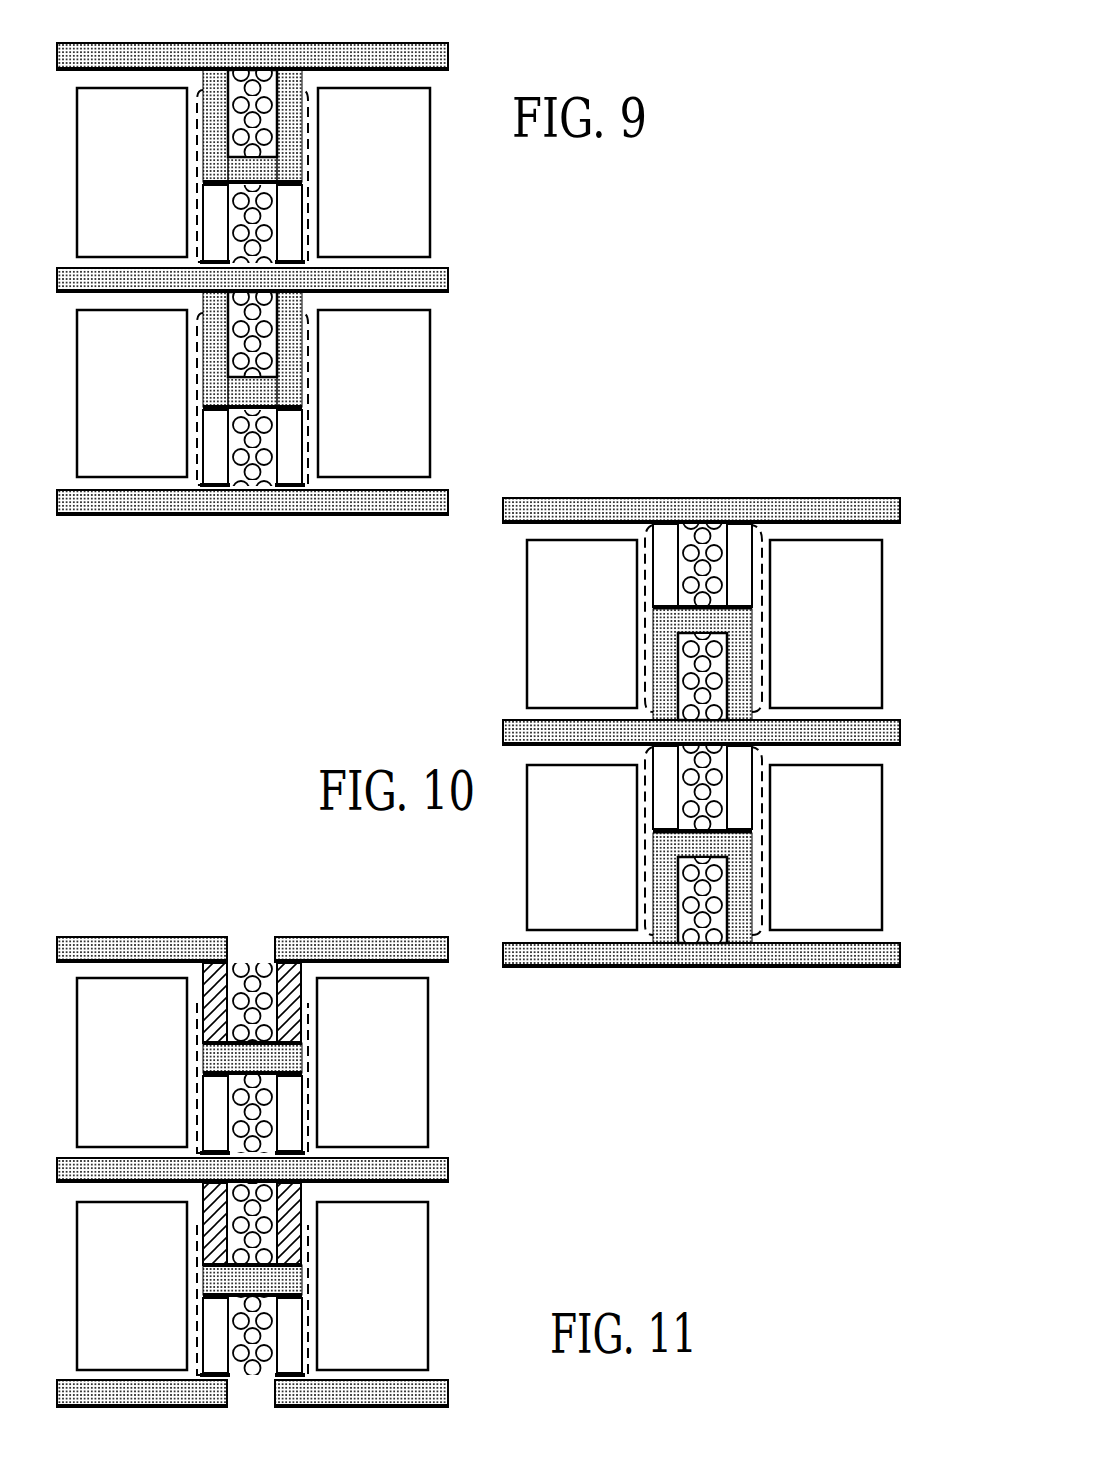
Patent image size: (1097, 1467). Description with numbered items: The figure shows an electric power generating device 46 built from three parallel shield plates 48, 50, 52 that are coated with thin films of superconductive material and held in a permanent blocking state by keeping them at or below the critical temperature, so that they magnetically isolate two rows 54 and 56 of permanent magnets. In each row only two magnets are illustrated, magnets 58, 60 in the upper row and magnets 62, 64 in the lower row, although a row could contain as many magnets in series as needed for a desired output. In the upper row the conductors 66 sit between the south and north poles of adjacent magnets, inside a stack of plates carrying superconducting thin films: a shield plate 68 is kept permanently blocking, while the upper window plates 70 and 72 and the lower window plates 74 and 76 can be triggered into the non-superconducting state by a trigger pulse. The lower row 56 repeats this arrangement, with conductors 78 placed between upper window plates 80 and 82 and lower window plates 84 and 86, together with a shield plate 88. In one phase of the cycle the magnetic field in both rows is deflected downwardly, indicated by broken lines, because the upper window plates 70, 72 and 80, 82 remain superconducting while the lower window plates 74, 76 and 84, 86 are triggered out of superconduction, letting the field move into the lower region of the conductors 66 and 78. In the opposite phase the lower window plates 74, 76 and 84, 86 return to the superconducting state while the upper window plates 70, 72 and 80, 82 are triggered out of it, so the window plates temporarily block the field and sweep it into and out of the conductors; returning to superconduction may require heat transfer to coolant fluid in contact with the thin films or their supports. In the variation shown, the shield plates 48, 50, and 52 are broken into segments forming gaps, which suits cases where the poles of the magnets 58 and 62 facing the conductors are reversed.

In FIG. 9, the electric power generating device 46 is at (165, 537).
In FIG. 10, the electric power generating device 46 is at (680, 468).
In FIG. 11, the electric power generating device 46 is at (225, 907).
In FIG. 9, the shield plate 48 is at (375, 43).
In FIG. 11, the shield plate 48 is at (372, 937).
In FIG. 9, the shield plate 50 is at (425, 268).
In FIG. 9, the shield plate 52 is at (360, 516).
In FIG. 11, the shield plate 52 is at (425, 1381).
In FIG. 9, the row of permanent magnets 54 is at (446, 194).
In FIG. 10, the row of permanent magnets 54 is at (497, 650).
In FIG. 11, the row of permanent magnets 54 is at (456, 1089).
In FIG. 9, the row of permanent magnets 56 is at (446, 400).
In FIG. 10, the row of permanent magnets 56 is at (492, 862).
In FIG. 11, the row of permanent magnets 56 is at (466, 1301).
In FIG. 9, the permanent magnet 58 is at (77, 118).
In FIG. 11, the permanent magnet 58 is at (77, 1034).
In FIG. 9, the permanent magnet 60 is at (430, 100).
In FIG. 11, the permanent magnet 60 is at (428, 1013).
In FIG. 9, the permanent magnet 62 is at (77, 348).
In FIG. 11, the permanent magnet 62 is at (77, 1257).
In FIG. 9, the permanent magnet 64 is at (430, 340).
In FIG. 11, the permanent magnet 64 is at (428, 1231).
In FIG. 9, the conductors 66 is at (250, 80).
In FIG. 9, the shield plate 68 is at (263, 148).
In FIG. 9, the upper window plate 70 is at (203, 82).
In FIG. 9, the upper window plate 72 is at (303, 88).
In FIG. 9, the lower window plate 74 is at (203, 228).
In FIG. 9, the lower window plate 76 is at (302, 230).
In FIG. 9, the conductors 78 is at (270, 305).
In FIG. 9, the upper window plate 80 is at (203, 322).
In FIG. 9, the upper window plate 82 is at (299, 322).
In FIG. 9, the lower window plate 84 is at (203, 447).
In FIG. 9, the lower window plate 86 is at (302, 447).
In FIG. 9, the shield plate 88 is at (256, 389).